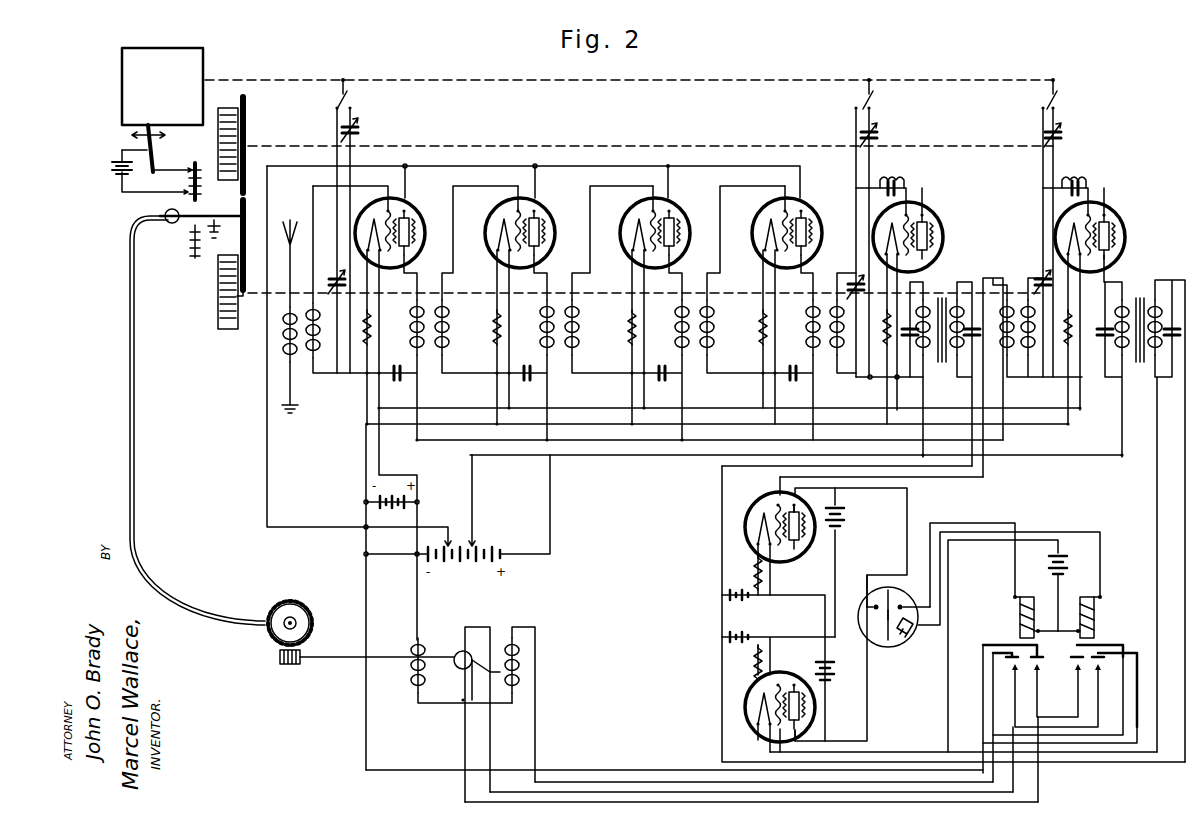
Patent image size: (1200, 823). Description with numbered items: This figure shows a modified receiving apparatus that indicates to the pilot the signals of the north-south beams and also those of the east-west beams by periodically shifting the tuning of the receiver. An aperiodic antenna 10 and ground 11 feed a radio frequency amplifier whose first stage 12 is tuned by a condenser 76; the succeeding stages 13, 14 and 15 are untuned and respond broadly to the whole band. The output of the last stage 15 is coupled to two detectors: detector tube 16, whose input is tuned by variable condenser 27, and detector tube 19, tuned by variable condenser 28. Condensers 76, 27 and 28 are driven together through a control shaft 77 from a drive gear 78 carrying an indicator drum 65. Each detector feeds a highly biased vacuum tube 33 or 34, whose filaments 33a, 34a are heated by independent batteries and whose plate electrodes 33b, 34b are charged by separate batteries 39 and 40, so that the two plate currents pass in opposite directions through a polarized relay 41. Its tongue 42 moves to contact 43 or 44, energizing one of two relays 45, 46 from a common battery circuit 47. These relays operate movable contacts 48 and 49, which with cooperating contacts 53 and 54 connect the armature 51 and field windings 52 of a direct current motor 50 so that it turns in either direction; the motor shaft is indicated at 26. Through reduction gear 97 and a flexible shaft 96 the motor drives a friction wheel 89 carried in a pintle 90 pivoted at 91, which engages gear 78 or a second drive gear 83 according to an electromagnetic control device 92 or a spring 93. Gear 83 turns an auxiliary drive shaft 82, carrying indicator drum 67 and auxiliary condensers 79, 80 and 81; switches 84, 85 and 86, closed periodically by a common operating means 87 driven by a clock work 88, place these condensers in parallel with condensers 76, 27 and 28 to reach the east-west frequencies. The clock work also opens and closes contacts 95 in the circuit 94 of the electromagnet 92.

The antenna 10 is at (290, 218).
The ground 11 is at (284, 408).
The radio frequency amplifier stage 12 is at (422, 209).
The radio frequency amplifier stage 13 is at (556, 209).
The radio frequency amplifier stage 14 is at (691, 209).
The radio frequency amplifier stage 15 is at (818, 209).
The detector tube 16 is at (941, 211).
The detector tube 19 is at (1123, 211).
The driving motor shaft 26 is at (463, 676).
The variable condenser 27 is at (847, 293).
The variable condenser 28 is at (1030, 283).
The highly biased vacuum tube 33 is at (742, 551).
The filament 33a is at (762, 532).
The plate electrode 33b is at (792, 515).
The highly biased vacuum tube 34 is at (742, 719).
The filament 34a is at (760, 698).
The plate electrode 34b is at (800, 707).
The battery 39 is at (853, 520).
The battery 40 is at (852, 676).
The polarized relay 41 is at (851, 594).
The relay tongue 42 is at (881, 615).
The relay contact 43 is at (878, 588).
The relay contact 44 is at (940, 596).
The relay 45 is at (1013, 615).
The relay 46 is at (1107, 601).
The common battery circuit 47 is at (1081, 558).
The movable contacts 48 is at (1015, 672).
The movable contacts 49 is at (1092, 672).
The direct current motor 50 is at (407, 643).
The armature 51 is at (500, 672).
The field windings 52 is at (409, 684).
The cooperating contacts 53 is at (1010, 652).
The cooperating contacts 54 is at (1100, 652).
The indicator drum 65 is at (232, 322).
The indicator drum 67 is at (233, 104).
The tuning condenser 76 is at (333, 274).
The control shaft 77 is at (478, 304).
The drive gear 78 is at (244, 302).
The auxiliary variable condenser 79 is at (361, 131).
The auxiliary variable condenser 80 is at (881, 136).
The auxiliary variable condenser 81 is at (1064, 136).
The auxiliary drive shaft 82 is at (554, 141).
The drive gear 83 is at (247, 128).
The switch device 84 is at (351, 94).
The switch device 85 is at (876, 94).
The switch device 86 is at (1063, 96).
The common operating means 87 is at (547, 76).
The clock work 88 is at (134, 60).
The friction wheel 89 is at (240, 250).
The pintle 90 is at (190, 228).
The pivot 91 is at (212, 242).
The electromagnetic control device 92 is at (190, 185).
The spring 93 is at (188, 246).
The circuit 94 is at (112, 164).
The contacts 95 is at (150, 174).
The flexible shaft 96 is at (128, 374).
The reduction gear 97 is at (296, 606).